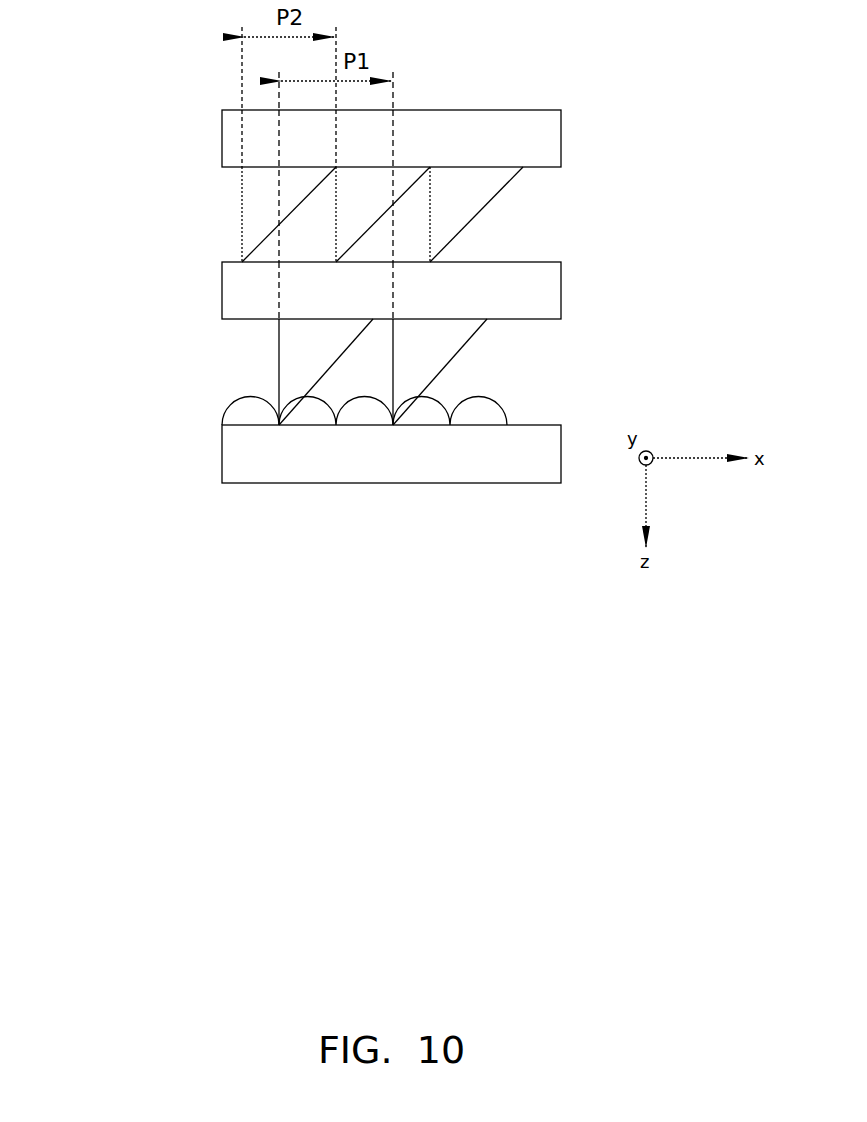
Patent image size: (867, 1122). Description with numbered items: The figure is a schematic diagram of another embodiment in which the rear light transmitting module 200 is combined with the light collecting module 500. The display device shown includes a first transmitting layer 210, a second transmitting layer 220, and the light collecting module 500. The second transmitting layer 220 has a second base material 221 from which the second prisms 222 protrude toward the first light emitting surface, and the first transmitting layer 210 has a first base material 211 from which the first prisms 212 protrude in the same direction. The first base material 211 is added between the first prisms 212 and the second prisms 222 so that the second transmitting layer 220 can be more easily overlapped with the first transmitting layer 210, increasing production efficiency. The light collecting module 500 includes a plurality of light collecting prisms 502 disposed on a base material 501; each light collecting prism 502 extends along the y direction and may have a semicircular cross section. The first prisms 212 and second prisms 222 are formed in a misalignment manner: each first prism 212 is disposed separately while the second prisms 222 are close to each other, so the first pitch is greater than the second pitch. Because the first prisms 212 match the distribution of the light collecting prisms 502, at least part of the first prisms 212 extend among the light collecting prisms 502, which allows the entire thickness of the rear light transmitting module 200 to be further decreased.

The rear light transmitting module 200 is at (380, 237).
The second transmitting layer 220 is at (449, 186).
The second base material 221 is at (552, 148).
The second prisms 222 is at (473, 203).
The first transmitting layer 210 is at (449, 343).
The first base material 211 is at (552, 302).
The first prisms 212 is at (445, 347).
The light collecting module 500 is at (307, 432).
The light collecting prisms 502 is at (236, 411).
The base material 501 is at (232, 457).